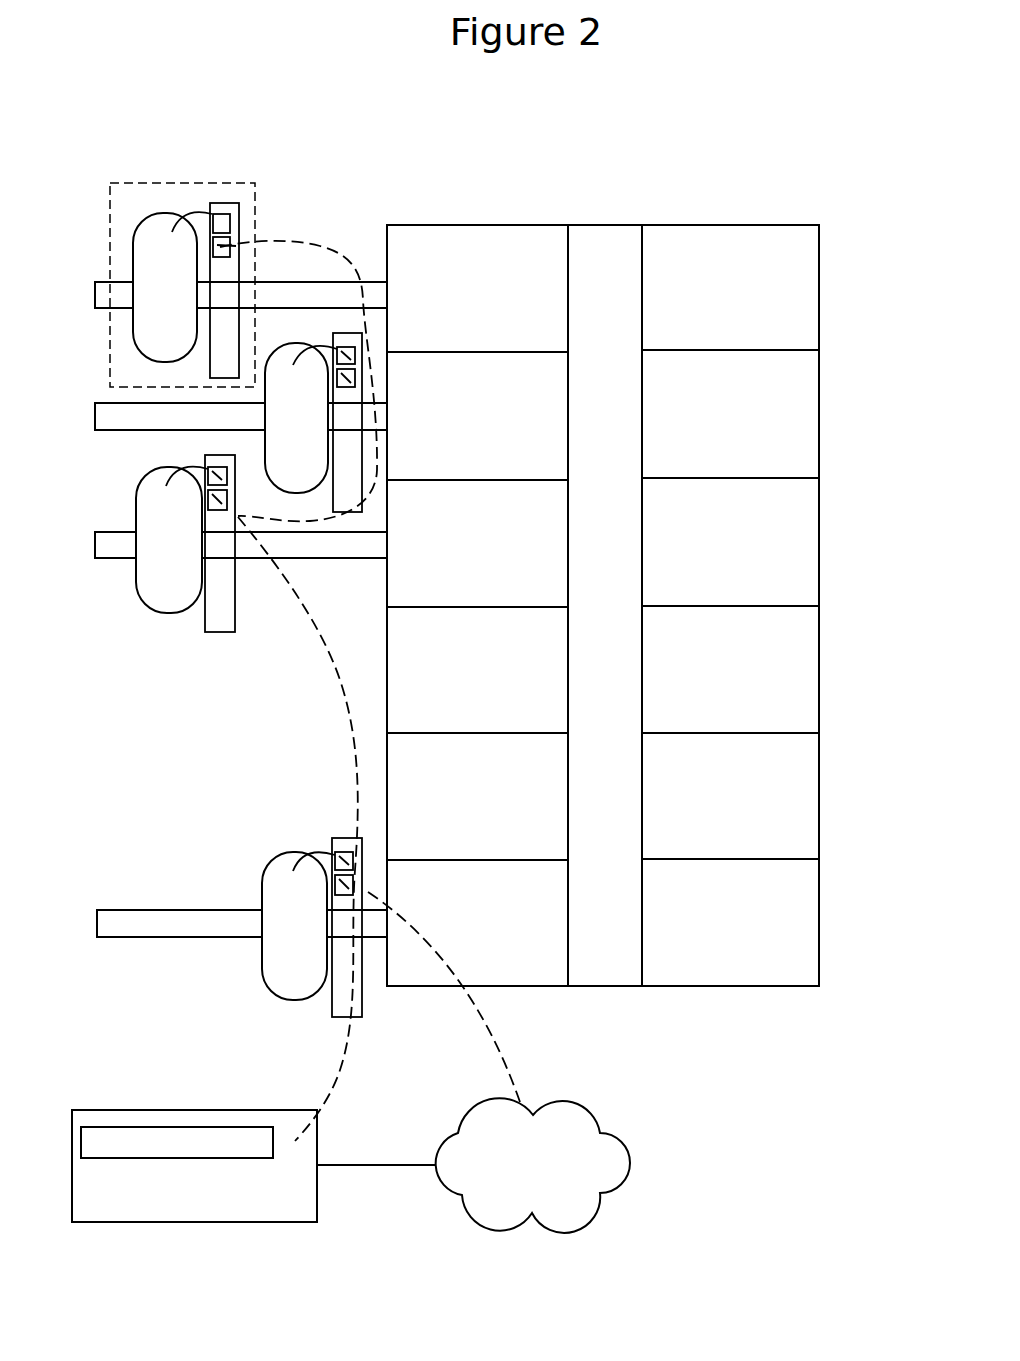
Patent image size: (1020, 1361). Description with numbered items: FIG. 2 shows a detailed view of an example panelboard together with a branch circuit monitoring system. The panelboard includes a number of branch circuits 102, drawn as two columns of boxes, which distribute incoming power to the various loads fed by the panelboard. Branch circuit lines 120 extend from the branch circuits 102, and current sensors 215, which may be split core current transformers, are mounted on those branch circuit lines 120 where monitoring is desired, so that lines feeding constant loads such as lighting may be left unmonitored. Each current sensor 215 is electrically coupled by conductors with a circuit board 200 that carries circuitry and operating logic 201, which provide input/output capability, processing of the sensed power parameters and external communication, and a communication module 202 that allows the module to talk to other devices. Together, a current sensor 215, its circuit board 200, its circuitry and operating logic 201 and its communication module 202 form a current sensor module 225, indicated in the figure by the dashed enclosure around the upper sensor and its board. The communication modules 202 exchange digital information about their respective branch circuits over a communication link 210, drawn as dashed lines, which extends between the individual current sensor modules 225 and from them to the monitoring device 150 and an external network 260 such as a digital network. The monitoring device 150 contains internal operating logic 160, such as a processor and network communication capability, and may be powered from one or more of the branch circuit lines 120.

The branch circuit 102 is at (486, 250).
The branch circuit line 120 is at (343, 278).
The monitoring device 150 is at (243, 1131).
The interoperability logic 160 is at (121, 1125).
The circuit board 200 is at (245, 552).
The circuitry and operating logic 201 is at (221, 211).
The communication module 202 is at (229, 232).
The communication link 210 is at (297, 236).
The current sensor 215 is at (140, 258).
The current sensor module 225 is at (109, 344).
The external network 260 is at (583, 1100).